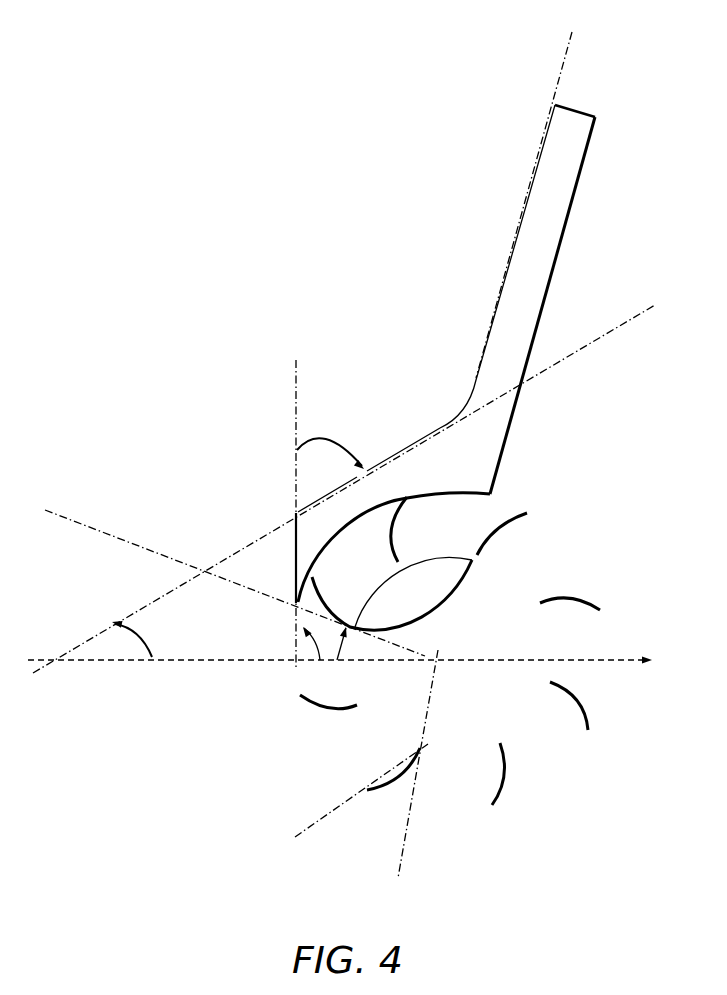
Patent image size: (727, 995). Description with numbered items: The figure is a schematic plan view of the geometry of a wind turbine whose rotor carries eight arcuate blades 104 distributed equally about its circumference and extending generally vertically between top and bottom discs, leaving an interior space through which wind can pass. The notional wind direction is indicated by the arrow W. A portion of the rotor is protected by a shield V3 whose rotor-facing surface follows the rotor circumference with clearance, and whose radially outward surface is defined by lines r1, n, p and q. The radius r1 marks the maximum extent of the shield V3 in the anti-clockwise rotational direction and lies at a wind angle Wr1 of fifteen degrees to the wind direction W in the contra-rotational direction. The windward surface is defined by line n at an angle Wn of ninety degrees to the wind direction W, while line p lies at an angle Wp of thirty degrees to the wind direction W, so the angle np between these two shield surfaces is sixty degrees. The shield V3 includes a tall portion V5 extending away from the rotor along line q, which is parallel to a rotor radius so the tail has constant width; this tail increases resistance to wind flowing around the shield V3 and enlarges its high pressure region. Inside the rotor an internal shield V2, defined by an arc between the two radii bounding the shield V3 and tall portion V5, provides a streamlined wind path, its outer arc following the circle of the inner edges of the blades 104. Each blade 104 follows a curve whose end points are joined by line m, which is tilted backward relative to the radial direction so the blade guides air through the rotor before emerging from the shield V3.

The rotor blades 104 is at (505, 777).
The tall portion V5 is at (549, 258).
The shield V3 is at (385, 501).
The internal shield V2 is at (427, 603).
The line q is at (526, 195).
The line p is at (350, 482).
The line n is at (254, 514).
The angle np is at (330, 440).
The radius r1 is at (223, 576).
The wind direction W is at (352, 660).
The angle Wp is at (140, 645).
The angle Wn is at (318, 650).
The wind angle Wr1 is at (350, 653).
The line m is at (350, 801).